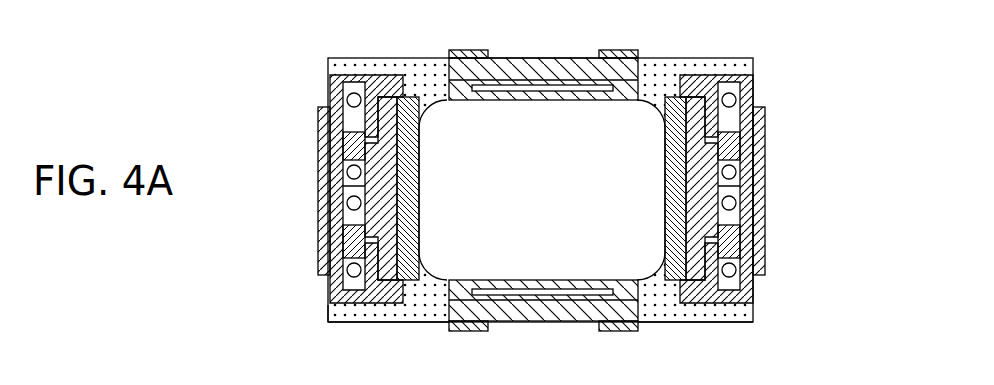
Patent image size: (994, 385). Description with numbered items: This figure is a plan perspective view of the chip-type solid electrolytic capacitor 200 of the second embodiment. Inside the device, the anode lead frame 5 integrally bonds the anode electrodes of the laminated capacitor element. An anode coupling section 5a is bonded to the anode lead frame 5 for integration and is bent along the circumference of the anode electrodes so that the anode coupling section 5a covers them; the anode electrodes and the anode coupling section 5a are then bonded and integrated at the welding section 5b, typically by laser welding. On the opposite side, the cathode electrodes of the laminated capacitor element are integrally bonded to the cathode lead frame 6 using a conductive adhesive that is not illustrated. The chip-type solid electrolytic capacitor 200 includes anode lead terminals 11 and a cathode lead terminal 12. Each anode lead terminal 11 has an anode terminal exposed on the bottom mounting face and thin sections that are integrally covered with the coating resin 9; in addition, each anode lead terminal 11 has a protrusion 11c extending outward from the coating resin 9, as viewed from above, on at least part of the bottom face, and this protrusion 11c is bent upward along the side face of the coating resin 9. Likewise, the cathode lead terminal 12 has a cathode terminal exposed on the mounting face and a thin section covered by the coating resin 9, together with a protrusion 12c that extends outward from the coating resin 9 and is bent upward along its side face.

The anode lead frame 5 is at (347, 108).
The anode coupling section 5a is at (385, 152).
The welding section 5b is at (734, 205).
The cathode lead frame 6 is at (637, 97).
The coating resin 9 is at (331, 314).
The anode lead terminal 11 is at (381, 80).
The protrusion 11c is at (320, 192).
The cathode lead terminal 12 is at (543, 66).
The protrusion 12c is at (464, 54).
The chip-type solid electrolytic capacitor 200 is at (757, 57).